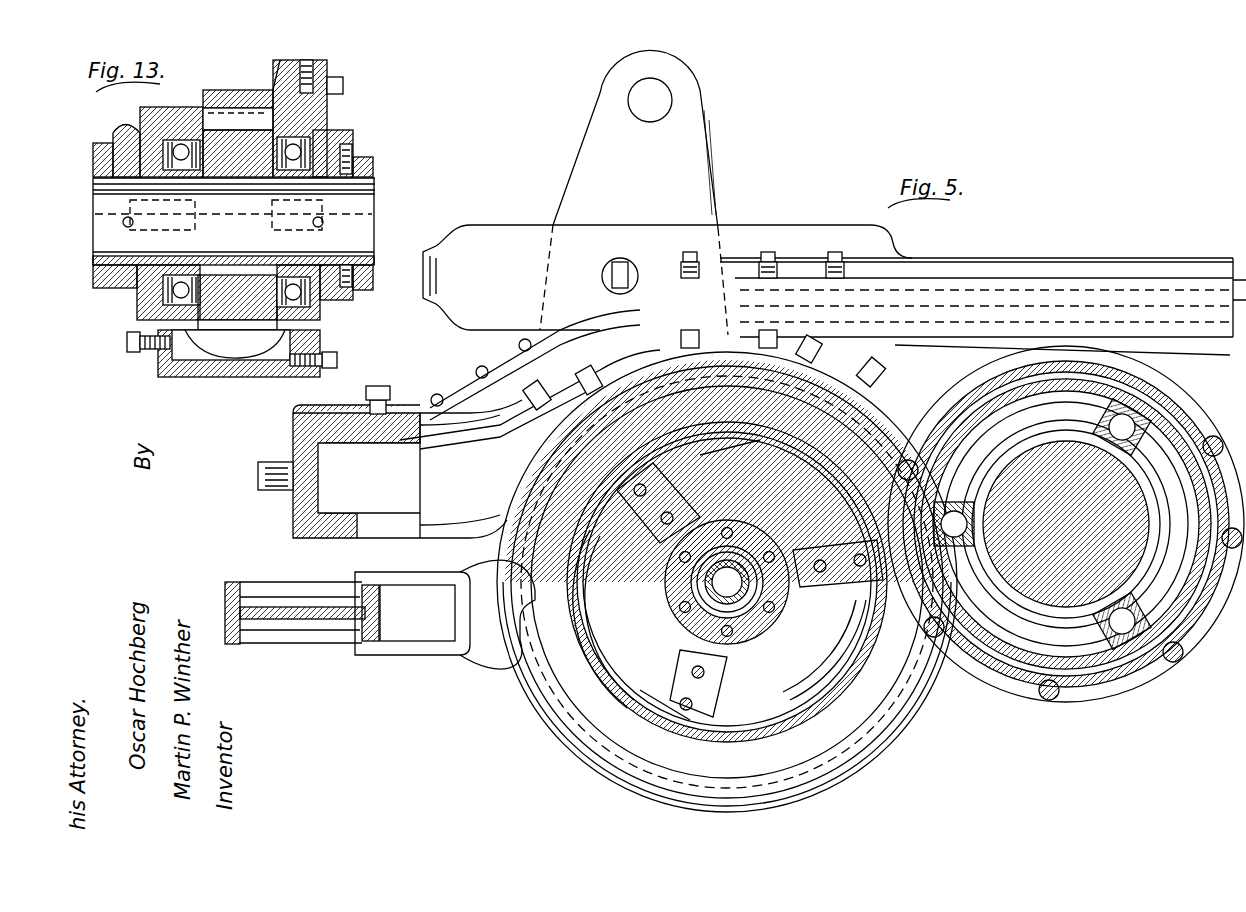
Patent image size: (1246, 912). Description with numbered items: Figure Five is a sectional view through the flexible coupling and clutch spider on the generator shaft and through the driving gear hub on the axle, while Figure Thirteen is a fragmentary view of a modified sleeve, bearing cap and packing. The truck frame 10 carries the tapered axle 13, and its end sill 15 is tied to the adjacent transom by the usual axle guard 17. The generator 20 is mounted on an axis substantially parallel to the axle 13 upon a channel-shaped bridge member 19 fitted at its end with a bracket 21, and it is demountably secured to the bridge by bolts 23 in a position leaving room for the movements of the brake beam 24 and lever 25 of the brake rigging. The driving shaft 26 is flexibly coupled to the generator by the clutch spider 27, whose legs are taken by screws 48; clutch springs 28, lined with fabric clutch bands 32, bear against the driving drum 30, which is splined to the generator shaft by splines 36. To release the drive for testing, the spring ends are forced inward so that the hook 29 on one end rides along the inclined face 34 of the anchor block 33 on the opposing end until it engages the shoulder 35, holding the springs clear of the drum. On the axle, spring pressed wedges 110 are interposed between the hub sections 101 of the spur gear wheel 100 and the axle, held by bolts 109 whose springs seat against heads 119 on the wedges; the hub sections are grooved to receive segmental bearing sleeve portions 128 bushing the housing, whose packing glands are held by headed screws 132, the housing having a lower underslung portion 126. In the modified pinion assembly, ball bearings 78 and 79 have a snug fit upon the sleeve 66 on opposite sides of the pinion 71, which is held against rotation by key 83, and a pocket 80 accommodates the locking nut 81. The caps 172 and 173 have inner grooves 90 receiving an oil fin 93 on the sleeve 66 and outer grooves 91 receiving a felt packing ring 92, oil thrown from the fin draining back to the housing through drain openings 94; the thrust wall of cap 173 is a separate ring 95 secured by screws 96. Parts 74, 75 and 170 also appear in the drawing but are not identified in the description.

In FIG. 5, the truck frame 10 is at (345, 540).
In FIG. 5, the axle 13 is at (1068, 440).
In FIG. 5, the end sill 15 is at (292, 524).
In FIG. 5, the axle guard 17 is at (1235, 275).
In FIG. 5, the bridge member 19 is at (925, 268).
In FIG. 5, the generator 20 is at (620, 772).
In FIG. 5, the bracket 21 is at (457, 400).
In FIG. 5, the bolts 23 is at (835, 252).
In FIG. 5, the brake beam 24 is at (240, 585).
In FIG. 5, the lever 25 is at (702, 150).
In FIG. 5, the driving shaft 26 is at (735, 566).
In FIG. 5, the clutch spider 27 is at (668, 472).
In FIG. 5, the clutch springs 28 is at (640, 672).
In FIG. 5, the hook 29 is at (800, 462).
In FIG. 5, the driving drum 30 is at (640, 720).
In FIG. 5, the fabric clutch bands 32 is at (650, 700).
In FIG. 5, the anchor block 33 is at (875, 378).
In FIG. 5, the inclined face 34 is at (610, 740).
In FIG. 5, the shoulder 35 is at (897, 432).
In FIG. 5, the splines 36 is at (740, 612).
In FIG. 5, the screws 48 is at (772, 625).
In FIG. 13, the sleeve 66 is at (225, 372).
In FIG. 13, the pinion 71 is at (200, 362).
In FIG. 13, the bearing housing 74 is at (185, 108).
In FIG. 13, the bolt 75 is at (322, 66).
In FIG. 13, the ball bearing 78 is at (175, 370).
In FIG. 13, the ball bearing 79 is at (270, 372).
In FIG. 13, the pocket 80 is at (122, 135).
In FIG. 13, the locking nut 81 is at (162, 318).
In FIG. 13, the key 83 is at (258, 172).
In FIG. 13, the inner grooves 90 is at (150, 290).
In FIG. 13, the outer grooves 91 is at (112, 282).
In FIG. 13, the packing ring 92 is at (356, 160).
In FIG. 13, the fin 93 is at (122, 262).
In FIG. 13, the drain openings 94 is at (123, 221).
In FIG. 13, the separate ring 95 is at (332, 148).
In FIG. 13, the screws 96 is at (342, 300).
In FIG. 13, the spur gear wheel 100 is at (205, 98).
In FIG. 5, the hub sections 101 is at (1130, 670).
In FIG. 5, the bolts 109 is at (1200, 440).
In FIG. 5, the spring pressed wedges 110 is at (1200, 660).
In FIG. 5, the heads 119 is at (1225, 480).
In FIG. 13, the lower underslung portion 126 is at (282, 380).
In FIG. 5, the segmental bearing sleeve portions 128 is at (975, 660).
In FIG. 5, the headed screws 132 is at (1045, 690).
In FIG. 5, the ring 170 is at (1095, 670).
In FIG. 13, the cap 172 is at (132, 346).
In FIG. 13, the cap 173 is at (338, 348).